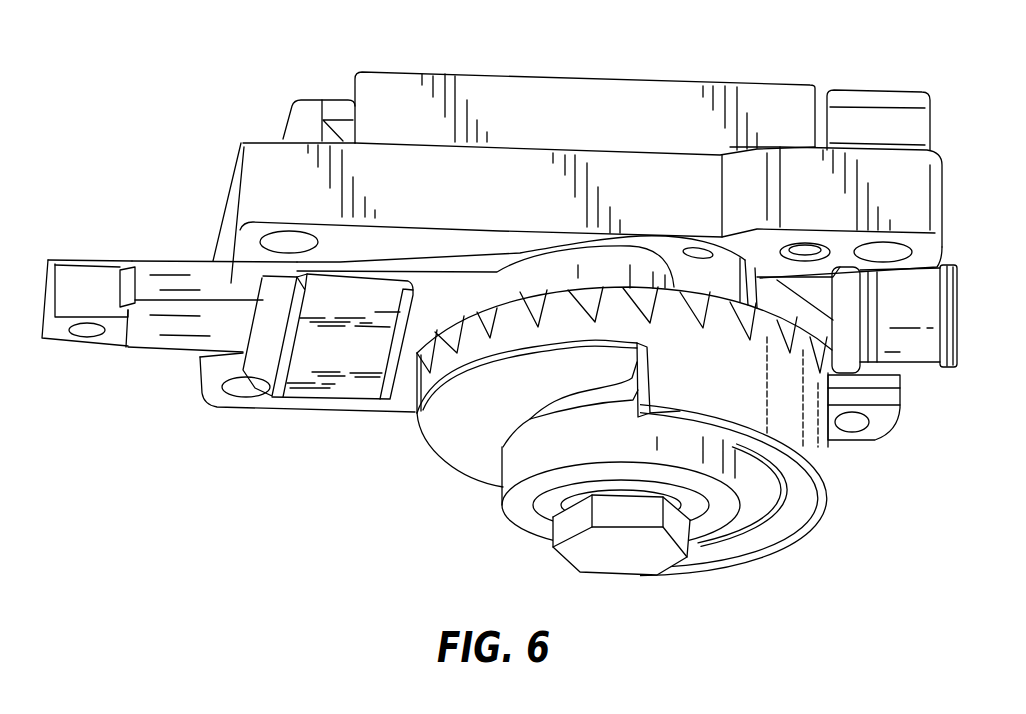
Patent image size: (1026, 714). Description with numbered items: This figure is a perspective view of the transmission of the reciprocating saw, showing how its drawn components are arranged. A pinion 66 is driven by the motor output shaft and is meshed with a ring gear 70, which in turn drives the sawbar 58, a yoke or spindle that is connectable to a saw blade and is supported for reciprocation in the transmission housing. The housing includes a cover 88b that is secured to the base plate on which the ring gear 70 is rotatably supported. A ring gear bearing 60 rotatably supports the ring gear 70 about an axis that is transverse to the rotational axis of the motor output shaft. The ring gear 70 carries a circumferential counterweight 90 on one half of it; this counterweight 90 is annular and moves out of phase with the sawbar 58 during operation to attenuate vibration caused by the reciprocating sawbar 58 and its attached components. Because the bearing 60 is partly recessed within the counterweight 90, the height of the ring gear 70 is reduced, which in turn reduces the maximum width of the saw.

The sawbar 58 is at (162, 282).
The bearing 60 is at (527, 510).
The pinion 66 is at (910, 338).
The ring gear 70 is at (473, 340).
The cover 88b is at (870, 118).
The counterweight 90 is at (813, 442).